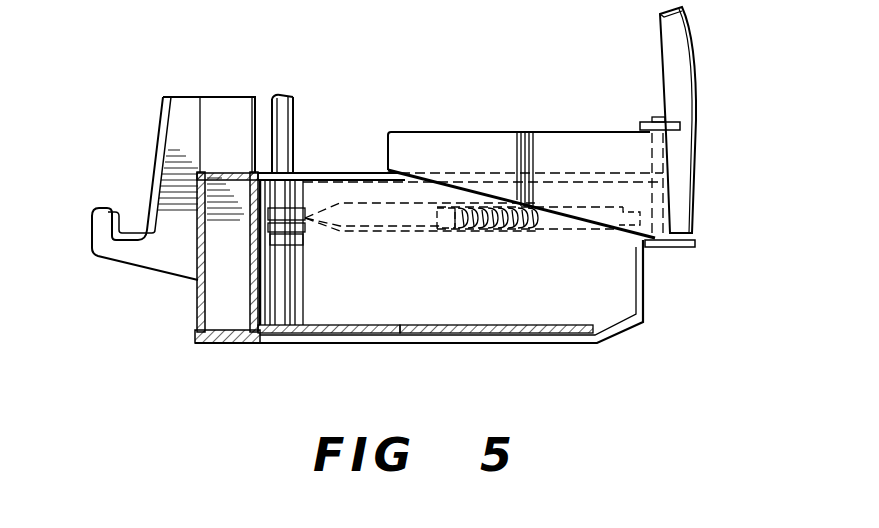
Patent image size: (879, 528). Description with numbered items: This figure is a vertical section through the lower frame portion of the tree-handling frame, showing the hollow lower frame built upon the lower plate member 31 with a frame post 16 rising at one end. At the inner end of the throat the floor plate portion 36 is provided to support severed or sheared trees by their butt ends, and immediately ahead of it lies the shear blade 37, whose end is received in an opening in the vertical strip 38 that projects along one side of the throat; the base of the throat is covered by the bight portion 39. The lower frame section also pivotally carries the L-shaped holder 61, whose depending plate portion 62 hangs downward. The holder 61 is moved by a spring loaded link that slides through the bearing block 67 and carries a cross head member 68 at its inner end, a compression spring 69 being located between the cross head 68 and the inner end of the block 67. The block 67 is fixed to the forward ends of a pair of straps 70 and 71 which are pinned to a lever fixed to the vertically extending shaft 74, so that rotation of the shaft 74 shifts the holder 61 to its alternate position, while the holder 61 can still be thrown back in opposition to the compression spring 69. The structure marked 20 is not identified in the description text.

The frame post 16 is at (682, 63).
The hook bracket 20 is at (130, 255).
The lower plate member 31 is at (382, 344).
The floor plate portion 36 is at (322, 325).
The shear blade 37 is at (408, 325).
The strip 38 is at (538, 301).
The bight portion 39 is at (252, 272).
The holder 61 is at (590, 130).
The depending plate portion 62 is at (507, 138).
The bearing block 67 is at (577, 233).
The cross head member 68 is at (450, 232).
The compression spring 69 is at (488, 228).
The strap 70 is at (380, 200).
The strap 71 is at (383, 231).
The vertically extending shaft 74 is at (283, 125).